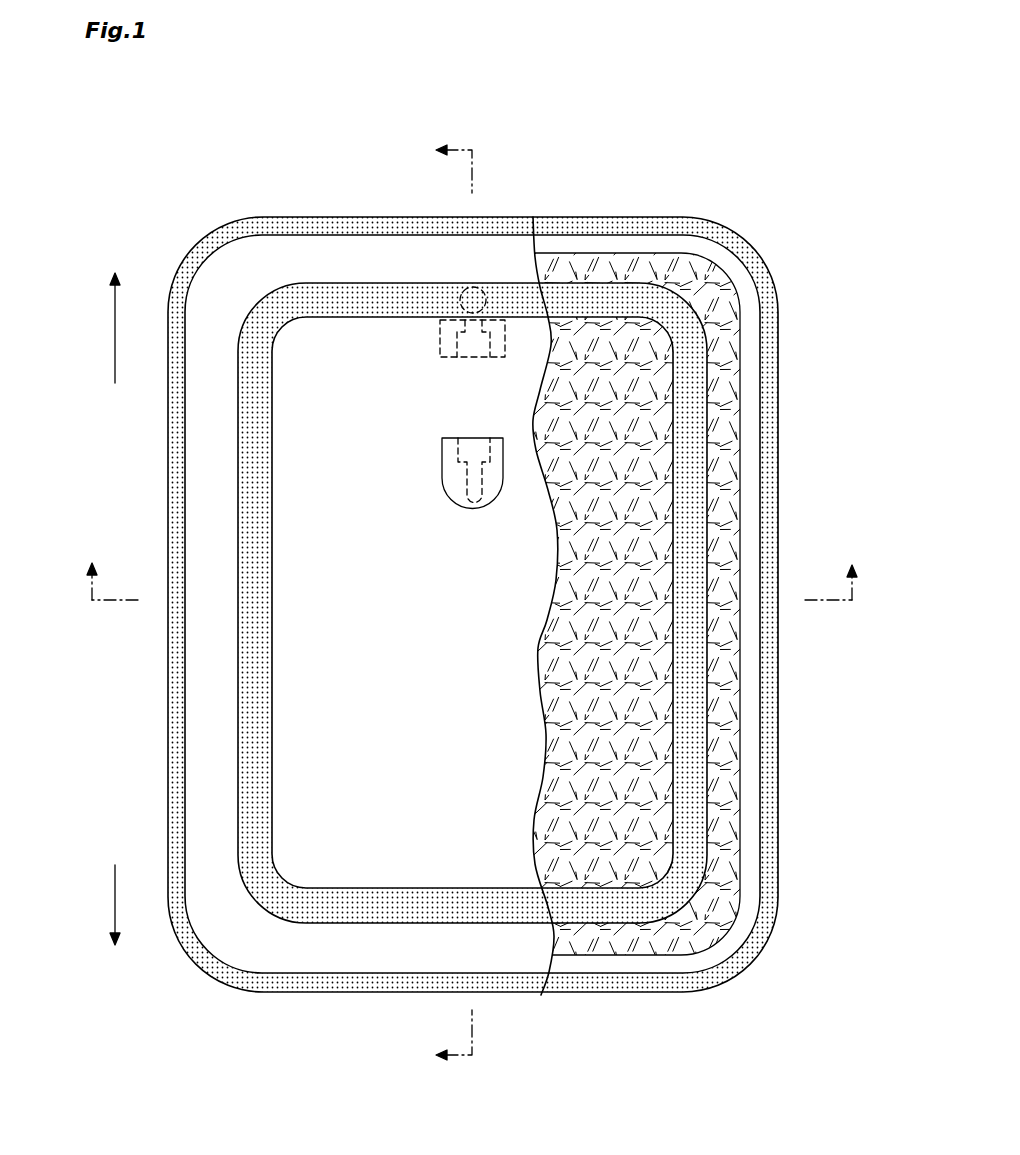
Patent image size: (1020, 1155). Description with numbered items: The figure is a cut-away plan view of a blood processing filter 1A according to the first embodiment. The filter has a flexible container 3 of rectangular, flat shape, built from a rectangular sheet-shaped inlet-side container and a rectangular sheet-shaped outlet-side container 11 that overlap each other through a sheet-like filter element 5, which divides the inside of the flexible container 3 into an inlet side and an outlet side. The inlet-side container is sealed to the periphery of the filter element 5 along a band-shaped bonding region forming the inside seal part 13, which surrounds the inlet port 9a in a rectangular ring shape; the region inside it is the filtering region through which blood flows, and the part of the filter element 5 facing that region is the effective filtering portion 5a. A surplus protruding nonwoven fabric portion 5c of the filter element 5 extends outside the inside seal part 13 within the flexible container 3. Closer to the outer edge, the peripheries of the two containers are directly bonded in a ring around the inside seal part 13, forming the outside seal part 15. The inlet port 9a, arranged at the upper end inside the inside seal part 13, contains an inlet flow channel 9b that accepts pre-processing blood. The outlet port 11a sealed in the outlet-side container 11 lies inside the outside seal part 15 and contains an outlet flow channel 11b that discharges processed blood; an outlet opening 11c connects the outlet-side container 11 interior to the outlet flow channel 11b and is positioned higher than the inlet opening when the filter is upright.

The blood processing filter 1A is at (693, 133).
The flexible container 3 is at (612, 124).
The filter element 5 is at (740, 732).
The effective filtering portion 5a is at (602, 877).
The protruding nonwoven fabric portion 5c is at (733, 795).
The inlet port 9a is at (442, 453).
The inlet flow channel 9b is at (447, 483).
The outlet-side container 11 is at (606, 245).
The outlet port 11a is at (440, 356).
The outlet flow channel 11b is at (440, 322).
The outlet opening 11c is at (458, 290).
The inside seal part 13 is at (315, 912).
The outside seal part 15 is at (320, 981).